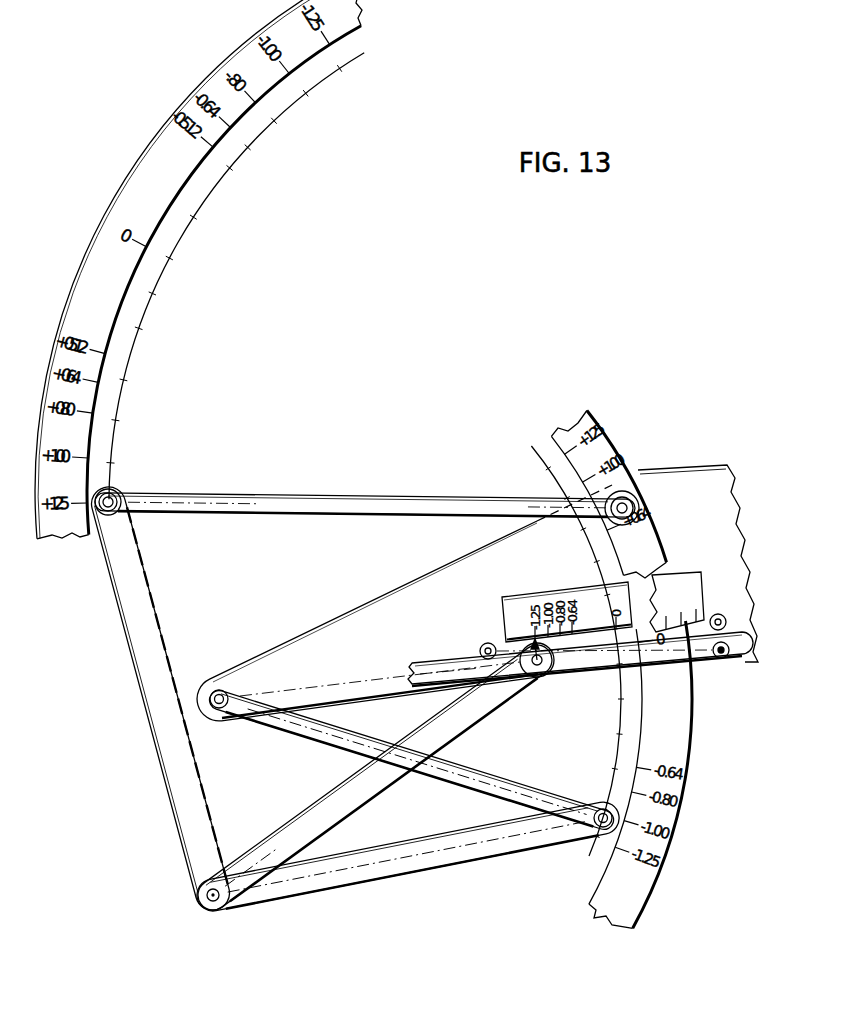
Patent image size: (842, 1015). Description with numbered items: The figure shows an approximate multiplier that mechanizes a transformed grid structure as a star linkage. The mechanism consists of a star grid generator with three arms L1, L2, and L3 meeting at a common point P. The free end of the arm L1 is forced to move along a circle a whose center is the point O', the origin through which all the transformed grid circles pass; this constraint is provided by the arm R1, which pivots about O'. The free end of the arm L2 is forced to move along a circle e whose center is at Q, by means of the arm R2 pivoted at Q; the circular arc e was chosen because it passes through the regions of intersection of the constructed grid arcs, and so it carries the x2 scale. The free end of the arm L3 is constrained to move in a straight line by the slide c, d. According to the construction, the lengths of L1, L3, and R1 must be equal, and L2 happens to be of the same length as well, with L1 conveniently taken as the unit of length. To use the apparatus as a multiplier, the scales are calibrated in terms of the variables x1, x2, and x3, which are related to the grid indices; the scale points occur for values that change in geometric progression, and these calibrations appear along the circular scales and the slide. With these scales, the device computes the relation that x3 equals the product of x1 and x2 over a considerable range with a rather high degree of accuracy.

The circle e is at (181, 245).
The x2 variable scale x2 is at (93, 312).
The arm L2 is at (151, 605).
The arm R2 is at (325, 500).
The common point O' is at (225, 691).
The center Q is at (634, 500).
The x1 variable scale x1 is at (631, 577).
The arm L3 is at (330, 806).
The arm R1 is at (489, 778).
The arm L1 is at (413, 862).
The common point P is at (198, 901).
The slide c is at (408, 676).
The x3 variable scale x3 is at (600, 625).
The slide d is at (726, 636).
The circle a is at (617, 730).